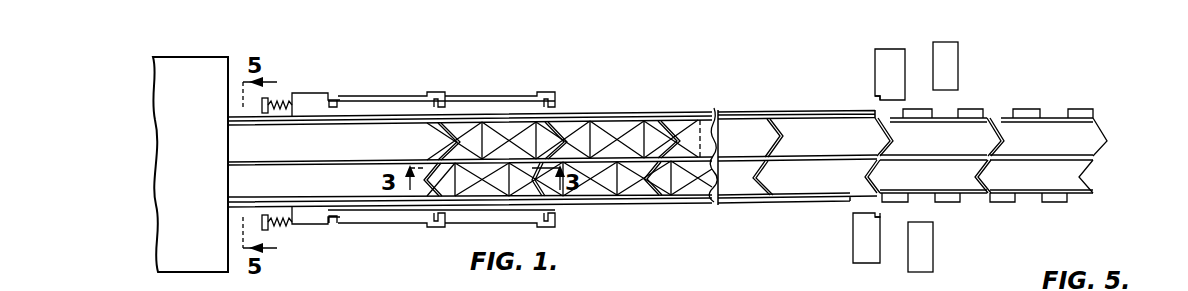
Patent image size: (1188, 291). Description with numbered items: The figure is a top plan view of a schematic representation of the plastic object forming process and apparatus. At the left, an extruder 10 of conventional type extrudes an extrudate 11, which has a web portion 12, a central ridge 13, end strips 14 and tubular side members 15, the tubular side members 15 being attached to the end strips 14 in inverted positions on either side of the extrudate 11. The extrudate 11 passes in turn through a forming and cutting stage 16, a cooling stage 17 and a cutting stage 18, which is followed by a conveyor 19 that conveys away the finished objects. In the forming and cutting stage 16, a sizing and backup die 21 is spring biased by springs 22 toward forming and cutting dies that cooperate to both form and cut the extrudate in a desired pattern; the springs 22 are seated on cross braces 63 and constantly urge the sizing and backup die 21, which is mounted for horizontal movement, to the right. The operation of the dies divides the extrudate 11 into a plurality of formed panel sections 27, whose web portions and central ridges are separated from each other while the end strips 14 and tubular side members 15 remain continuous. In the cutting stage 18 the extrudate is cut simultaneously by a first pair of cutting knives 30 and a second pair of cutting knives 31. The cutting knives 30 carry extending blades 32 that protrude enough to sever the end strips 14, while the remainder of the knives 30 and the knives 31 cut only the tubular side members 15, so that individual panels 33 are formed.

The extruder 10 is at (178, 200).
The extrudate 11 is at (240, 145).
The web portion 12 is at (378, 140).
The central ridge 13 is at (308, 163).
The end strips 14 is at (367, 204).
The tubular side members 15 is at (407, 117).
The forming and cutting stage 16 is at (512, 83).
The cooling stage 17 is at (745, 103).
The cutting stage 18 is at (980, 61).
The conveyor 19 is at (1110, 116).
The sizing and backup die 21 is at (314, 100).
The springs 22 is at (276, 101).
The formed panel sections 27 is at (628, 190).
The first pair of cutting knives 30 is at (880, 61).
The second pair of cutting knives 31 is at (946, 48).
The extending blades 32 is at (877, 102).
The individual panels 33 is at (1028, 132).
The cross braces 63 is at (268, 228).